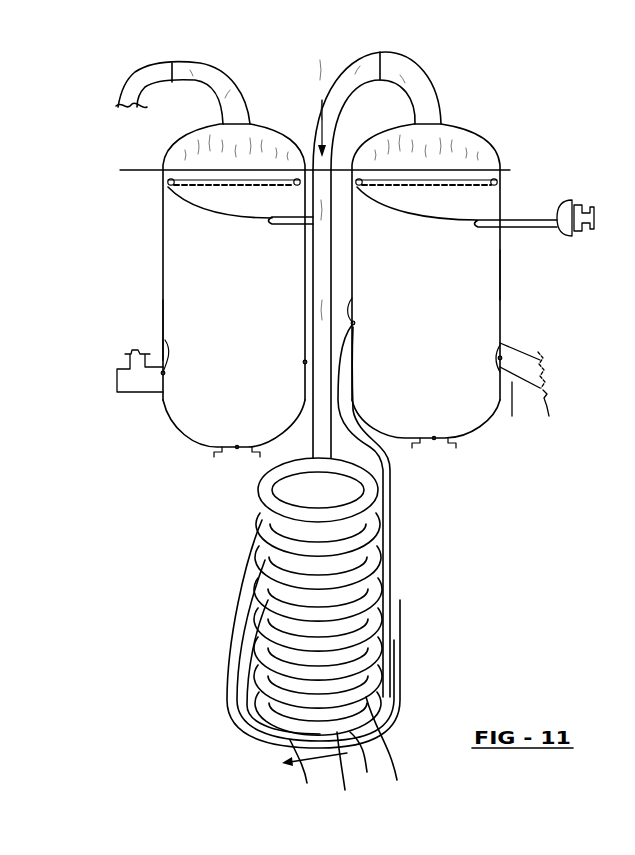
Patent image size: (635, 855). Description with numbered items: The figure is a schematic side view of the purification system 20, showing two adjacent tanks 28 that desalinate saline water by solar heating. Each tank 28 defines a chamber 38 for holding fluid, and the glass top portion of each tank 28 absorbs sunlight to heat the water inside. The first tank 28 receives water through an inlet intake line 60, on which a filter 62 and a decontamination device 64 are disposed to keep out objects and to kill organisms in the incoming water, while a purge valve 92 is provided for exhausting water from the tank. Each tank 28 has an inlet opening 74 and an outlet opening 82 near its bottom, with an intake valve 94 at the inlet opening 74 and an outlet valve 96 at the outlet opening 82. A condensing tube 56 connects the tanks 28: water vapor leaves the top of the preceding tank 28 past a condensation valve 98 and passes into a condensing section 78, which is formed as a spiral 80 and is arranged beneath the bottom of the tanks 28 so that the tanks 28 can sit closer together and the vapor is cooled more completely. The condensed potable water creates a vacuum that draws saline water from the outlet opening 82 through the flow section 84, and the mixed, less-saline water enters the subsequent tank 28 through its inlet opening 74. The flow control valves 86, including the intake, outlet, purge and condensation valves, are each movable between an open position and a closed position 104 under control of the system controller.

The purification system 20 is at (86, 175).
The tank 28 is at (193, 273).
The chamber 38 is at (175, 326).
The condensing tube 56 is at (313, 629).
The inlet intake line 60 is at (511, 411).
The filter 62 is at (548, 414).
The decontamination device 64 is at (541, 358).
The inlet opening 74 is at (294, 356).
The condensing section 78 is at (373, 566).
The spiral 80 is at (343, 774).
The outlet opening 82 is at (178, 370).
The flow section 84 is at (314, 775).
The flow control valve 86 is at (167, 78).
The purge valve 92 is at (574, 216).
The intake valve 94 is at (304, 360).
The outlet valve 96 is at (167, 370).
The condensation valve 98 is at (162, 68).
The closed position 104 is at (205, 72).